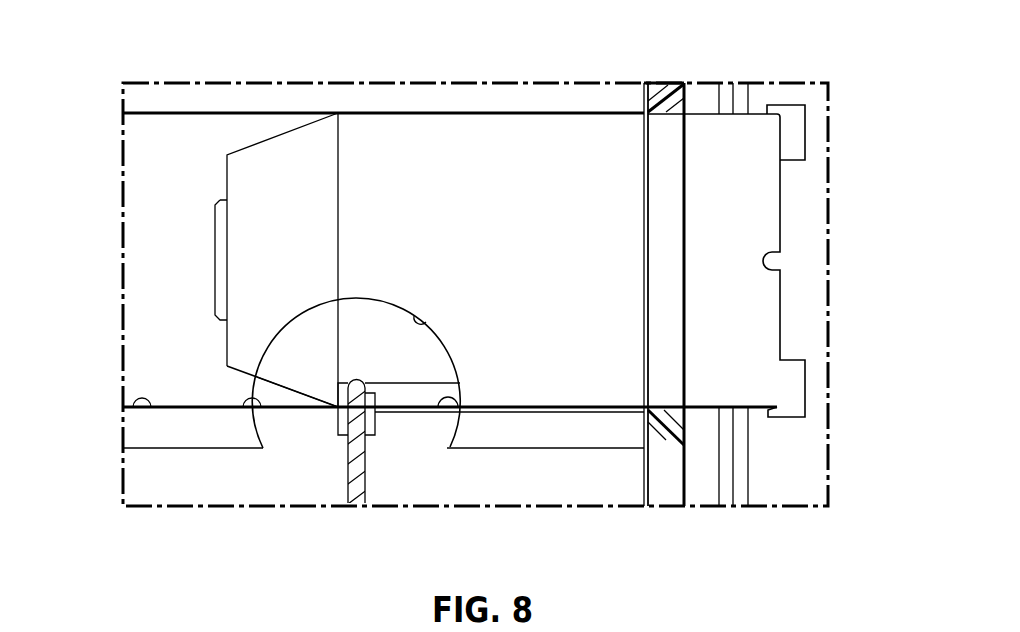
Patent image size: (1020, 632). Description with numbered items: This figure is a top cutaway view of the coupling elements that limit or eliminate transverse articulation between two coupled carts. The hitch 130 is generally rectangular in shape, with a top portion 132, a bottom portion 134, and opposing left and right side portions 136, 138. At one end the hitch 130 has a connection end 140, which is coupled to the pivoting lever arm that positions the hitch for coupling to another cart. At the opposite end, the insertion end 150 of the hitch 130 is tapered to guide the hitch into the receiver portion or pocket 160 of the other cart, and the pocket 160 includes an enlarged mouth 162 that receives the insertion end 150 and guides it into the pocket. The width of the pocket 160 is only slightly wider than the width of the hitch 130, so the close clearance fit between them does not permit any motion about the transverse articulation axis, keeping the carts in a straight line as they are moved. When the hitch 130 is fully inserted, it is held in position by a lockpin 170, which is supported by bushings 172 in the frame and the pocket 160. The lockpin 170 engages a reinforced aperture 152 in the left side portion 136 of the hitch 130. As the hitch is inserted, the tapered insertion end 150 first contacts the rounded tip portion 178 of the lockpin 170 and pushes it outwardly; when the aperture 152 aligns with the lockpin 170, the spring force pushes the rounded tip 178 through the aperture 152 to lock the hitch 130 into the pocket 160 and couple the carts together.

The hitch 130 is at (372, 153).
The top portion 132 is at (572, 158).
The bottom portion 134 is at (408, 357).
The left side portion 136 is at (502, 408).
The right side portion 138 is at (477, 112).
The connection end 140 is at (782, 337).
The insertion end 150 is at (267, 140).
The reinforced aperture 152 is at (338, 410).
The pocket 160 is at (172, 190).
The enlarged mouth 162 is at (667, 98).
The lockpin 170 is at (347, 483).
The bushings 172 is at (378, 437).
The rounded tip portion 178 is at (367, 354).